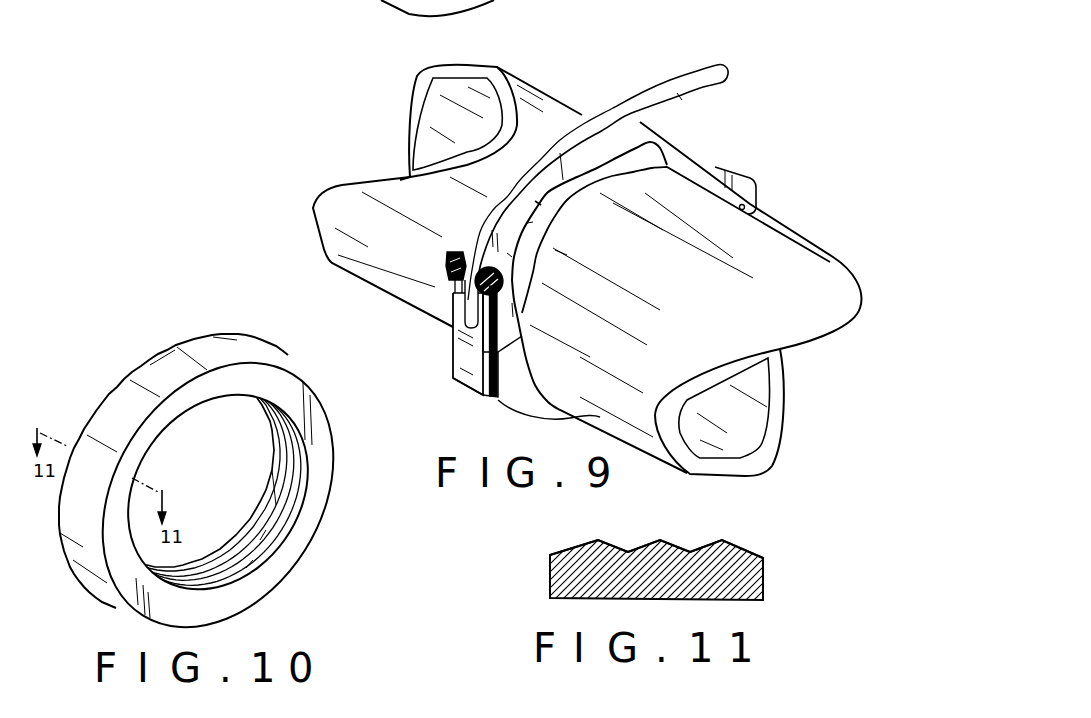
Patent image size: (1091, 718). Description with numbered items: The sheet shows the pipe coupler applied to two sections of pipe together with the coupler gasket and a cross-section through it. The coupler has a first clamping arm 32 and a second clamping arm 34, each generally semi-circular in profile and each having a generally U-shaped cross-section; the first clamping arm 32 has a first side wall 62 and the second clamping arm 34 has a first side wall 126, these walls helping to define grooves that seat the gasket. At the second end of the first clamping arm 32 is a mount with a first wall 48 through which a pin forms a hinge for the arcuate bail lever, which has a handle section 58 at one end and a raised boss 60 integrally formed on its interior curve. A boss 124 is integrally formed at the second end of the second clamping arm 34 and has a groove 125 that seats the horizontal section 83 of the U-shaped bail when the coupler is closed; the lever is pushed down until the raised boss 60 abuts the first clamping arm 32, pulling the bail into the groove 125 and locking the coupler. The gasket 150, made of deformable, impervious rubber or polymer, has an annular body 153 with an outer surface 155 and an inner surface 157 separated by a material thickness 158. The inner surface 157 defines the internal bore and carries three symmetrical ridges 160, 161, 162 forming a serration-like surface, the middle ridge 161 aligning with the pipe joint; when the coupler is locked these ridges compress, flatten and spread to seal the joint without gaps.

In FIG. 9, the first clamping arm 32 is at (655, 130).
In FIG. 9, the second clamping arm 34 is at (551, 418).
In FIG. 9, the first wall 48 is at (456, 325).
In FIG. 9, the handle section 58 is at (662, 102).
In FIG. 9, the raised boss 60 is at (553, 180).
In FIG. 9, the first side wall 62 is at (713, 177).
In FIG. 9, the horizontal section 83 is at (465, 388).
In FIG. 9, the boss 124 is at (461, 362).
In FIG. 9, the groove 125 is at (493, 400).
In FIG. 9, the first side wall 126 is at (535, 402).
In FIG. 10, the gasket 150 is at (180, 322).
In FIG. 10, the annular body 153 is at (157, 372).
In FIG. 10, the outer surface 155 is at (122, 420).
In FIG. 10, the inner surface 157 is at (250, 478).
In FIG. 11, the inner surface 157 is at (741, 550).
In FIG. 10, the material thickness 158 is at (270, 380).
In FIG. 10, the ridge 160 is at (230, 530).
In FIG. 11, the ridge 160 is at (597, 540).
In FIG. 10, the middle ridge 161 is at (250, 568).
In FIG. 11, the middle ridge 161 is at (660, 540).
In FIG. 10, the ridge 162 is at (265, 538).
In FIG. 11, the ridge 162 is at (720, 540).